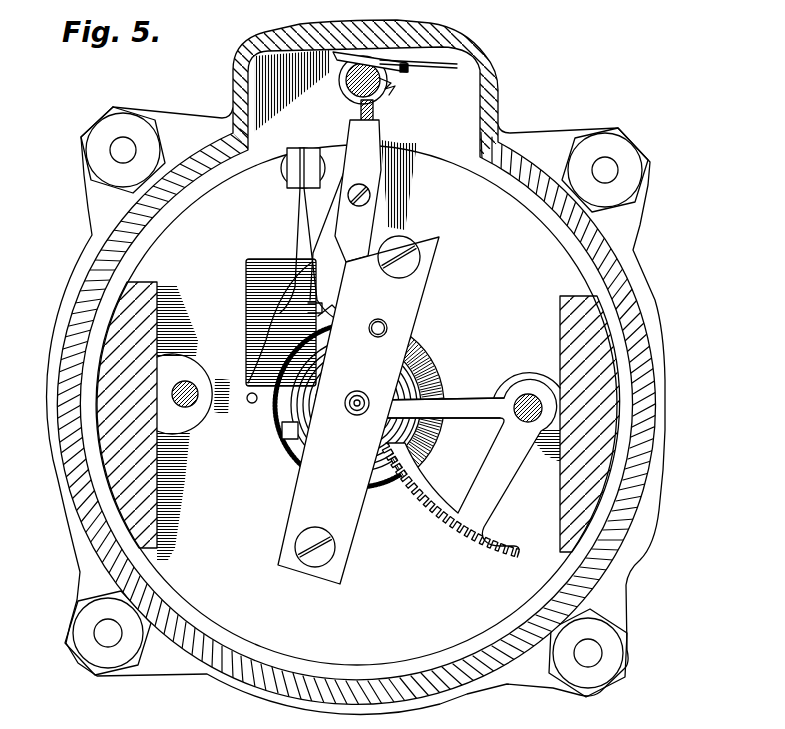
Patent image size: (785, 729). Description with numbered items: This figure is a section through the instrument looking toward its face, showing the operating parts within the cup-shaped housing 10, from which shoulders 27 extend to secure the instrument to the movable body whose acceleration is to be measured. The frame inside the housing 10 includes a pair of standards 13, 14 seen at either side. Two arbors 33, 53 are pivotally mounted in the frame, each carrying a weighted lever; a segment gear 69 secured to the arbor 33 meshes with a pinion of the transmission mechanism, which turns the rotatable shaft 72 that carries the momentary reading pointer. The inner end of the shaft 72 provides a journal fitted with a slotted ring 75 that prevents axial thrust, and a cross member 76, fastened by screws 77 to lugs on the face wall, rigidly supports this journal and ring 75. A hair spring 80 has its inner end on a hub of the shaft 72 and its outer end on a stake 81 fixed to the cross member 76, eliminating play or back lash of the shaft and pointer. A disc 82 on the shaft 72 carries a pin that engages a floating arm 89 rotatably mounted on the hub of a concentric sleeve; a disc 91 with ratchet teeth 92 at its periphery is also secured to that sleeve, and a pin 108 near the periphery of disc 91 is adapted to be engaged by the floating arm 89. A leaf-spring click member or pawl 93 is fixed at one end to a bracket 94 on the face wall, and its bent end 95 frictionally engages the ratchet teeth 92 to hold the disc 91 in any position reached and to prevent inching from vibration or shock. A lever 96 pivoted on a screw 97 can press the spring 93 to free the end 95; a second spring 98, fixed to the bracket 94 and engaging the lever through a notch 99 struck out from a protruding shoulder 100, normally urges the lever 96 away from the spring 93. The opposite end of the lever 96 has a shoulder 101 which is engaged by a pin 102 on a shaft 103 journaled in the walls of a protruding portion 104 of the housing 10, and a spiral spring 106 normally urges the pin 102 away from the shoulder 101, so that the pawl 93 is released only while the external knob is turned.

The housing 10 is at (659, 330).
The standard 13 is at (597, 393).
The standard 14 is at (110, 387).
The shoulders 27 is at (84, 201).
The arbor 33 is at (527, 402).
The arbor 53 is at (185, 408).
The segment gear 69 is at (423, 501).
The rotatable shaft 72 is at (355, 414).
The slotted bushing or ring 75 is at (357, 392).
The cross member 76 is at (410, 292).
The screws 77 is at (412, 263).
The hair spring 80 is at (422, 390).
The stake 81 is at (388, 328).
The disc 82 is at (310, 360).
The floating arm 89 is at (290, 437).
The disc 91 is at (288, 421).
The ratchet teeth 92 is at (416, 361).
The click member or pawl 93 is at (278, 285).
The bracket 94 is at (294, 175).
The end 95 is at (252, 404).
The lever 96 is at (392, 231).
The screw 97 is at (366, 201).
The second spring 98 is at (312, 245).
The notch 99 is at (318, 316).
The protruding shoulder 100 is at (308, 303).
The shoulder 101 is at (380, 113).
The pin 102 is at (359, 112).
The shaft 103 is at (384, 88).
The protruding portion 104 is at (477, 58).
The spiral spring 106 is at (340, 83).
The pin 108 is at (296, 458).